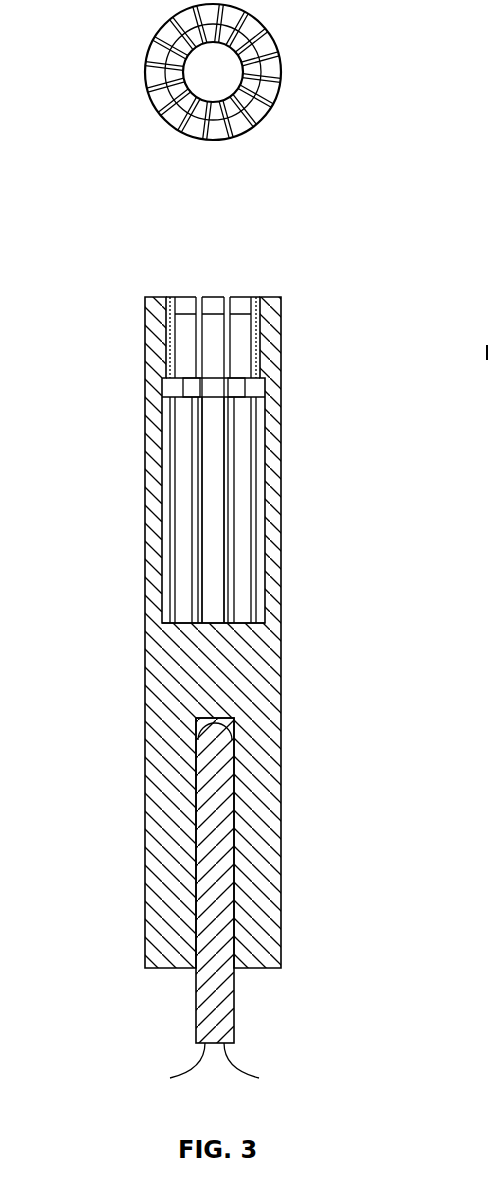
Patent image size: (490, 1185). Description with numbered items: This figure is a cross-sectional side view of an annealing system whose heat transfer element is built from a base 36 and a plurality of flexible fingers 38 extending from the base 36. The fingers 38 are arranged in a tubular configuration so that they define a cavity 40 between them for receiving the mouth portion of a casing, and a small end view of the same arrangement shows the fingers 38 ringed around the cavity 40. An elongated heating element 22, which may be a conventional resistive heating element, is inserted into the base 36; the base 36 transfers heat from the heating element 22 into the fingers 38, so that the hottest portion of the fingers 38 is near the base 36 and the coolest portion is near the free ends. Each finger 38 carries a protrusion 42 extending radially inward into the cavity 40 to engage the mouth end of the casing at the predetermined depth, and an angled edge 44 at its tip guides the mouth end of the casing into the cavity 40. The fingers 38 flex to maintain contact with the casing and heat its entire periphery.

The heating element 22 is at (196, 1002).
The base 36 is at (145, 752).
The fingers 38 is at (275, 42).
The cavity 40 is at (202, 84).
The protrusion 42 is at (252, 410).
The angled edge 44 is at (272, 297).